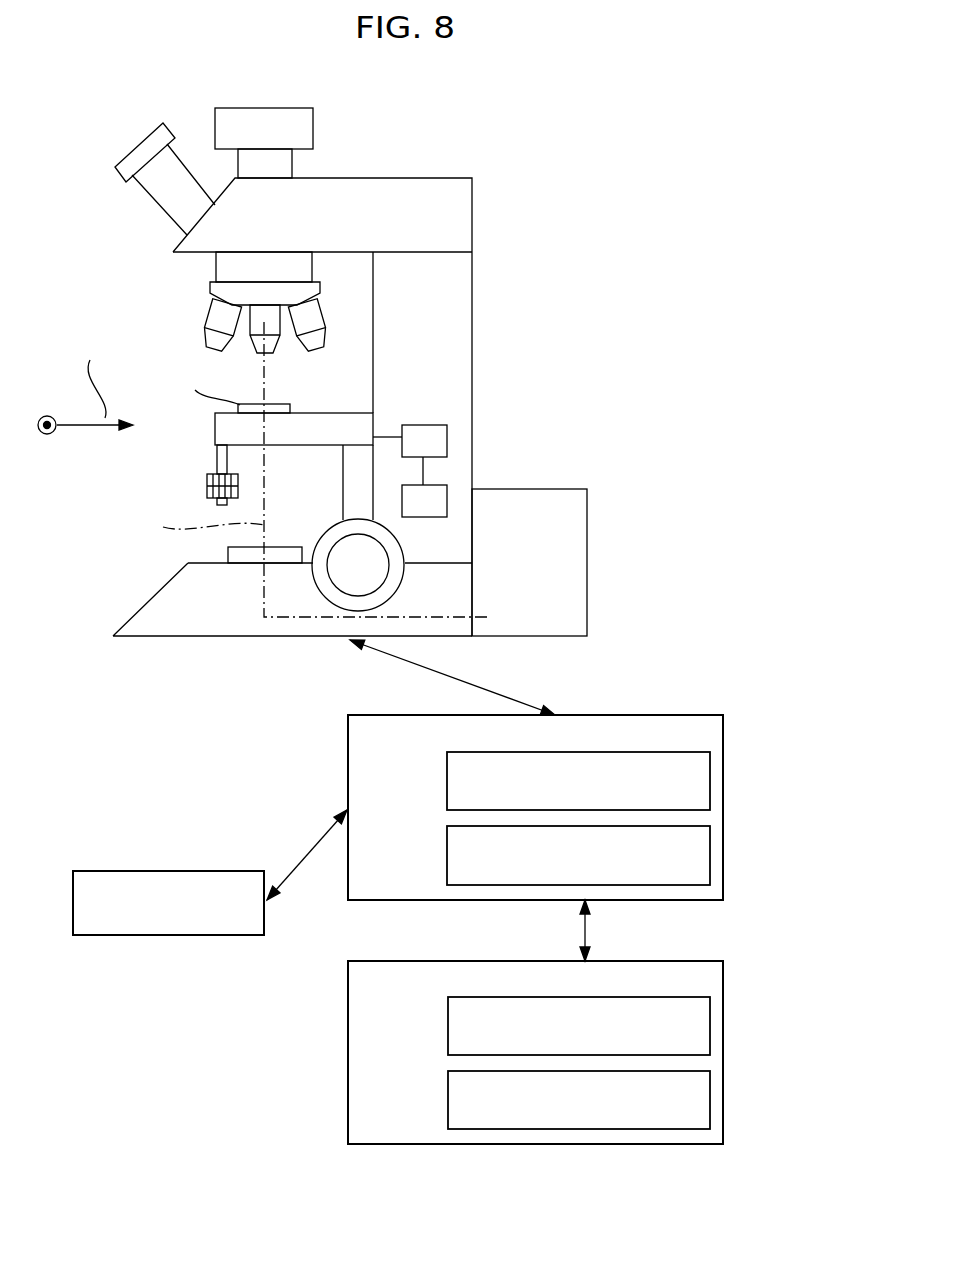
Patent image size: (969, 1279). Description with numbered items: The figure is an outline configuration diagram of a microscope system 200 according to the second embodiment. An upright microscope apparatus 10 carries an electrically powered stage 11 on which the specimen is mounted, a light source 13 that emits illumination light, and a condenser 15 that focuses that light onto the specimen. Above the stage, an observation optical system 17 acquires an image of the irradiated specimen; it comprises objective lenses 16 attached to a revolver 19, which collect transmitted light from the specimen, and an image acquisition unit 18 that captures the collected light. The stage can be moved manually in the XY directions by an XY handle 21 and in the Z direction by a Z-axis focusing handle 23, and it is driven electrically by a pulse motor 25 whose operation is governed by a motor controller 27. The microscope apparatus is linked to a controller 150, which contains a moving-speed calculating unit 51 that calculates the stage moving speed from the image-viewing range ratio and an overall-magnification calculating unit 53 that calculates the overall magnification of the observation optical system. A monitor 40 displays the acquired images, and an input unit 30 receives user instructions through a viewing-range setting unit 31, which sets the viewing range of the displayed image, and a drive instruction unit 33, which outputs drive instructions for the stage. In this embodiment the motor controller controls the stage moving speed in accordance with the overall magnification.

The microscope system 200 is at (662, 158).
The microscope apparatus 10 is at (518, 182).
The image acquisition unit 18 is at (261, 108).
The observation optical system 17 is at (95, 228).
The revolver 19 is at (216, 272).
The objective lenses 16 is at (277, 343).
The electrically powered stage 11 is at (215, 428).
The XY handle 21 is at (207, 485).
The Z-axis focusing handle 23 is at (390, 575).
The condenser 15 is at (288, 547).
The pulse motor 25 is at (449, 437).
The motor controller 27 is at (449, 500).
The light source 13 is at (587, 553).
The controller 150 is at (660, 715).
The overall-magnification calculating unit 53 is at (447, 788).
The moving-speed calculating unit 51 is at (447, 846).
The monitor 40 is at (143, 871).
The input unit 30 is at (348, 1038).
The viewing-range setting unit 31 is at (448, 1016).
The drive instruction unit 33 is at (448, 1092).